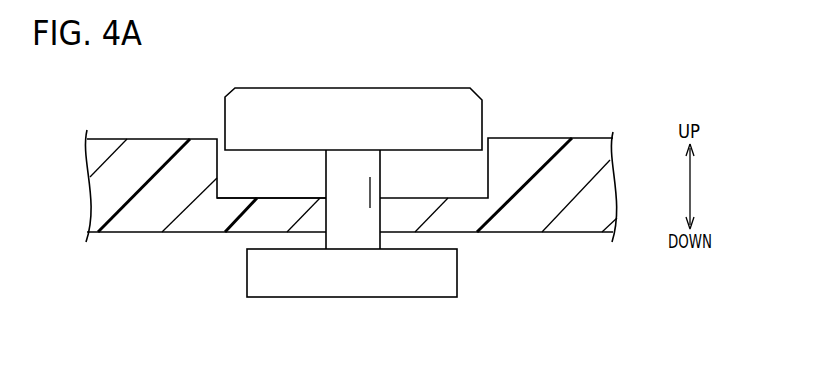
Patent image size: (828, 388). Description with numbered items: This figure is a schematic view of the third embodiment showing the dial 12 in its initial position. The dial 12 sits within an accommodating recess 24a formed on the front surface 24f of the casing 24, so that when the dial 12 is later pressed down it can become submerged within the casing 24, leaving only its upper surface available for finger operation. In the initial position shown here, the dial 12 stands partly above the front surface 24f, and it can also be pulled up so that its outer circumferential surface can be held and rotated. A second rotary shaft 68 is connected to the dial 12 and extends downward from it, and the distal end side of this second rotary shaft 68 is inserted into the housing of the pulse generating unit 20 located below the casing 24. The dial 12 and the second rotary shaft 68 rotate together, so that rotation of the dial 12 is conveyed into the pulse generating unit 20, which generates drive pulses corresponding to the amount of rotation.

The dial 12 is at (380, 88).
The pulse generating unit 20 is at (457, 278).
The casing 24 is at (140, 160).
The accommodating recess 24a is at (249, 177).
The front surface 24f is at (527, 138).
The second rotary shaft 68 is at (340, 176).